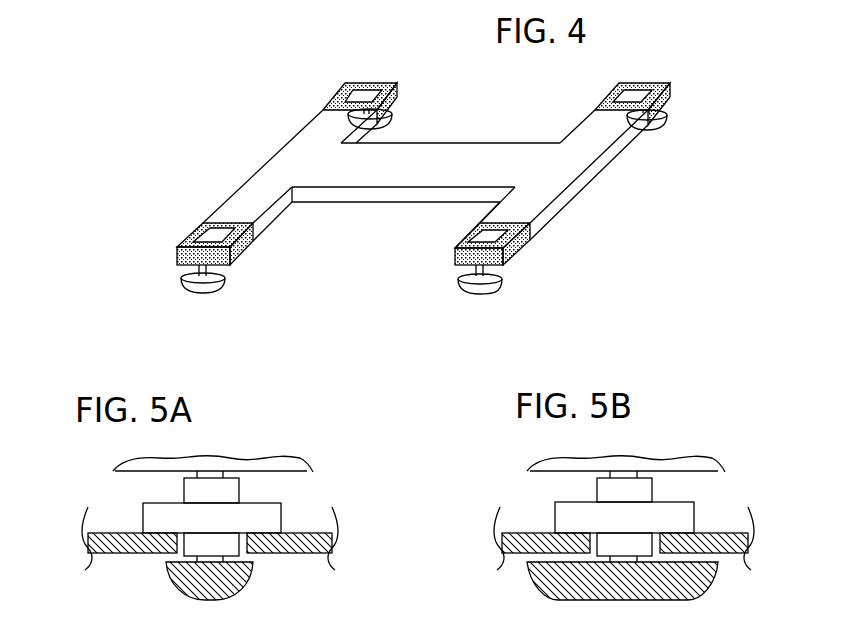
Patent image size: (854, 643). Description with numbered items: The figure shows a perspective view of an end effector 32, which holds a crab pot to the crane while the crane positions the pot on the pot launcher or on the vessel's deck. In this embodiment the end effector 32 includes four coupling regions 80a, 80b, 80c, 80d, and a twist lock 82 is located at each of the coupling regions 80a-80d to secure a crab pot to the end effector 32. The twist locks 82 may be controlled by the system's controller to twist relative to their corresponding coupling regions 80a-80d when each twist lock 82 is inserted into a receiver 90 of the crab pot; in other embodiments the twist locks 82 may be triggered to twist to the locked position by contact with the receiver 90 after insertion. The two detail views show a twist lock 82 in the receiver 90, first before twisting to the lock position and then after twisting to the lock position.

In FIG. 4, the end effector 32 is at (227, 110).
In FIG. 4, the coupling region 80a is at (515, 250).
In FIG. 5A, the coupling region 80a is at (278, 508).
In FIG. 5B, the coupling region 80a is at (692, 508).
In FIG. 4, the coupling region 80b is at (245, 243).
In FIG. 4, the coupling region 80c is at (407, 92).
In FIG. 4, the coupling region 80d is at (678, 92).
In FIG. 4, the twist lock 82 is at (205, 290).
In FIG. 5A, the twist lock 82 is at (225, 590).
In FIG. 5B, the twist lock 82 is at (638, 590).
In FIG. 5A, the receiver 90 is at (123, 553).
In FIG. 5B, the receiver 90 is at (523, 553).